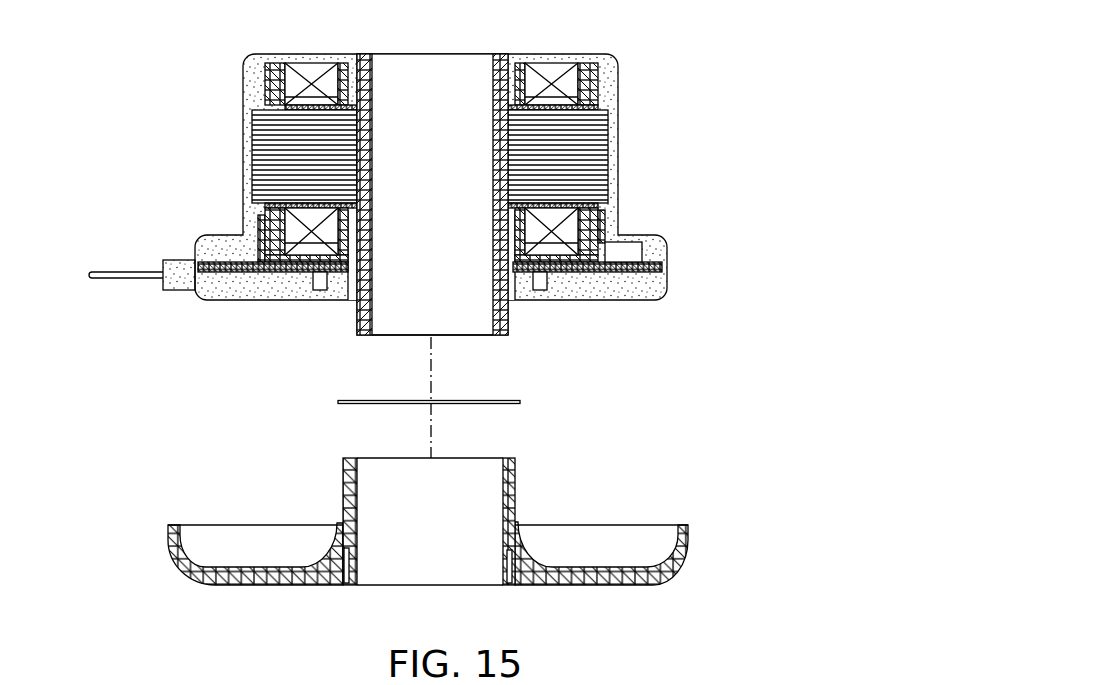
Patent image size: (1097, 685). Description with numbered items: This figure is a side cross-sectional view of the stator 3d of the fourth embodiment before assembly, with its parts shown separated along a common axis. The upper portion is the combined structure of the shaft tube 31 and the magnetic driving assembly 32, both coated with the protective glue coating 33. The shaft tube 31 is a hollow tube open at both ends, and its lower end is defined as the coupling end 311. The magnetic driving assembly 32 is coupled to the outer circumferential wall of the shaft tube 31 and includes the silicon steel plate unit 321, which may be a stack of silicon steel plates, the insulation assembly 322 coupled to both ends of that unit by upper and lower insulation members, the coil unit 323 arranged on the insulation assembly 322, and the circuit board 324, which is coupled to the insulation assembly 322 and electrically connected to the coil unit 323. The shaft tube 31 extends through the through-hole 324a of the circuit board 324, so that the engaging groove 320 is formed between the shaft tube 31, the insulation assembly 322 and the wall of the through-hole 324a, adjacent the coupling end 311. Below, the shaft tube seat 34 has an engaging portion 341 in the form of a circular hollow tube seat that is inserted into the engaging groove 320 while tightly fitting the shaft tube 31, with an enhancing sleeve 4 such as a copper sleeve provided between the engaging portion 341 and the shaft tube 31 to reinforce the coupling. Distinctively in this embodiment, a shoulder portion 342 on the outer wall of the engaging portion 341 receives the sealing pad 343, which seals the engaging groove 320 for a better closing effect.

The stator 3d is at (465, 201).
The protective glue coating 33 is at (253, 90).
The magnetic driving assembly 32 is at (519, 201).
The coil unit 323 is at (598, 66).
The silicon steel plate unit 321 is at (602, 127).
The insulation assembly 322 is at (603, 212).
The engaging groove 320 is at (528, 242).
The circuit board 324 is at (618, 262).
The through-hole 324a is at (514, 238).
The shaft tube 31 is at (405, 328).
The coupling end 311 is at (503, 330).
The sealing pad 343 is at (338, 402).
The shaft tube seat 34 is at (441, 539).
The engaging portion 341 is at (518, 465).
The shoulder portion 342 is at (518, 520).
The enhancing sleeve 4 is at (347, 585).